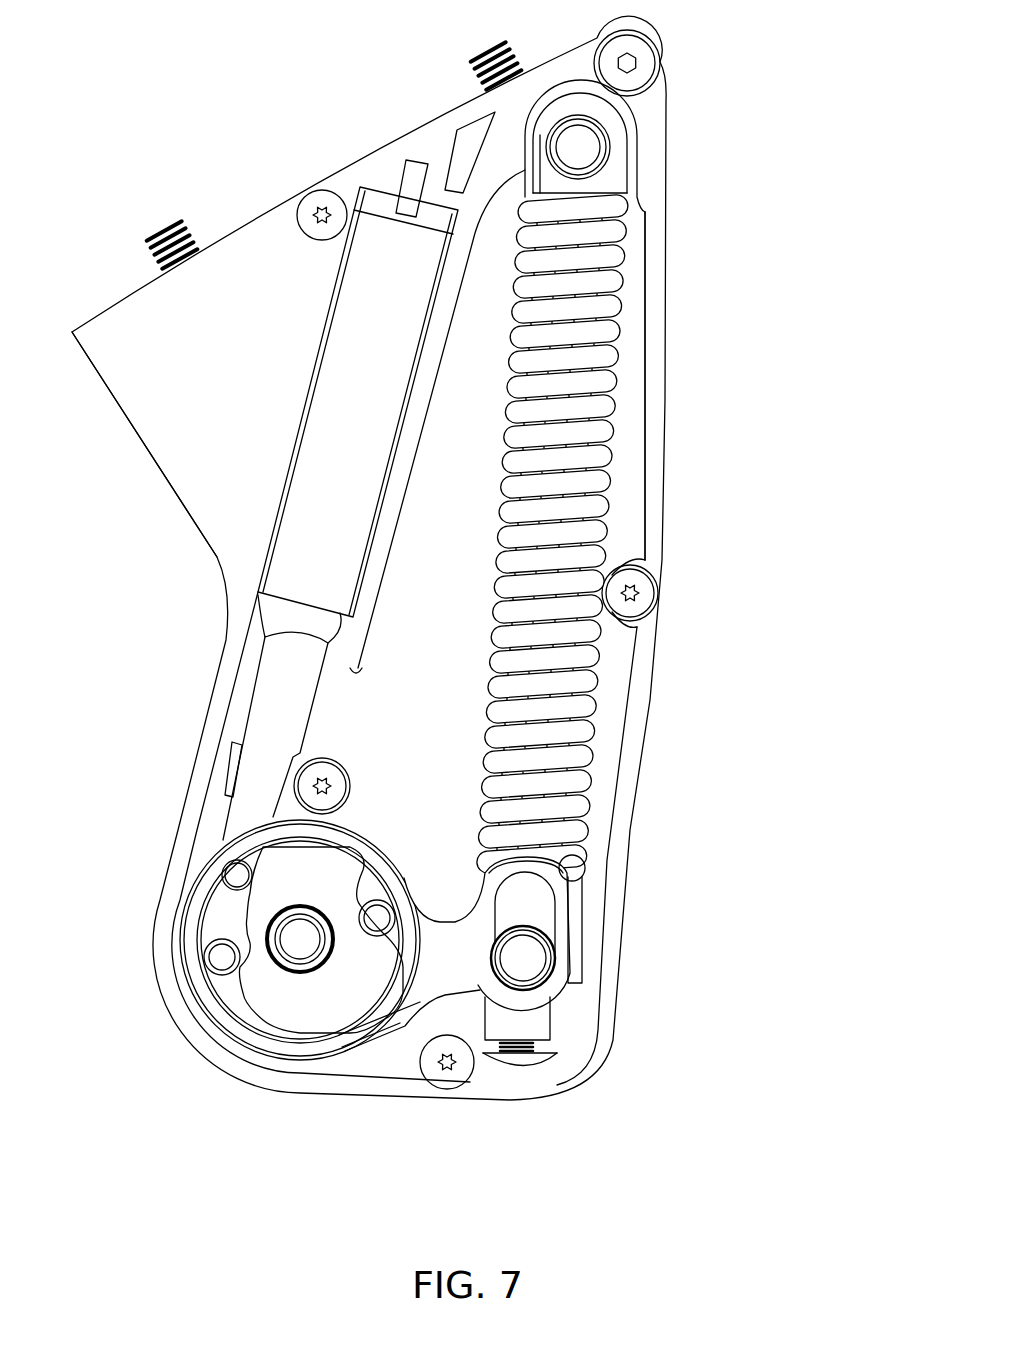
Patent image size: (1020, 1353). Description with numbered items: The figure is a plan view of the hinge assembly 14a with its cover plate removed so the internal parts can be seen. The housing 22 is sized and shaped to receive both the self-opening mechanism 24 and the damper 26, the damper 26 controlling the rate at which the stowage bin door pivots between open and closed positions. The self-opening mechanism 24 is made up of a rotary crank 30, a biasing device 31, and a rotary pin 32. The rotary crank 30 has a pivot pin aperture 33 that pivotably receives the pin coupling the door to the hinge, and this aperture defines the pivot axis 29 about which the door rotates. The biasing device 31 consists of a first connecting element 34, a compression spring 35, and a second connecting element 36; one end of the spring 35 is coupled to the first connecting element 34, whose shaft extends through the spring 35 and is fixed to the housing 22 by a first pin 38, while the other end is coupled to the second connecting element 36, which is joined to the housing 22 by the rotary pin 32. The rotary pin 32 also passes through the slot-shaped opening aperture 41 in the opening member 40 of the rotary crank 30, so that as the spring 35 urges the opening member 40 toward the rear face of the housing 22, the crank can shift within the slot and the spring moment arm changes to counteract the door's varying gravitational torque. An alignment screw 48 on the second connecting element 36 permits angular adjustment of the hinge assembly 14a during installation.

The hinge assembly 14a is at (806, 246).
The housing 22 is at (115, 303).
The self-opening mechanism 24 is at (592, 805).
The damper 26 is at (290, 553).
The pivot axis 29 is at (296, 942).
The rotary crank 30 is at (382, 1025).
The biasing device 31 is at (595, 704).
The rotary pin 32 is at (533, 958).
The pivot pin aperture 33 is at (308, 942).
The first connecting element 34 is at (612, 177).
The spring 35 is at (617, 383).
The second connecting element 36 is at (527, 898).
The first pin 38 is at (578, 147).
The opening member 40 is at (523, 1003).
The opening aperture 41 is at (512, 911).
The alignment screw 48 is at (527, 1060).